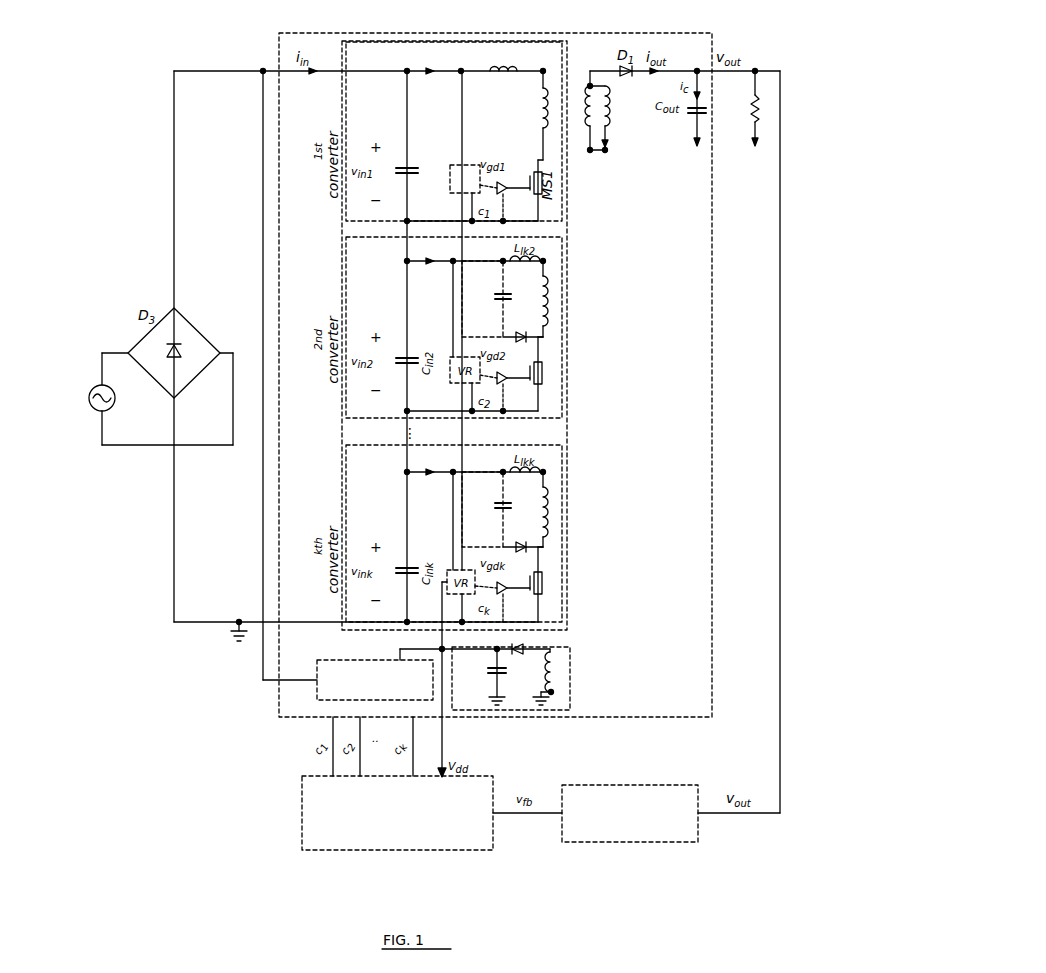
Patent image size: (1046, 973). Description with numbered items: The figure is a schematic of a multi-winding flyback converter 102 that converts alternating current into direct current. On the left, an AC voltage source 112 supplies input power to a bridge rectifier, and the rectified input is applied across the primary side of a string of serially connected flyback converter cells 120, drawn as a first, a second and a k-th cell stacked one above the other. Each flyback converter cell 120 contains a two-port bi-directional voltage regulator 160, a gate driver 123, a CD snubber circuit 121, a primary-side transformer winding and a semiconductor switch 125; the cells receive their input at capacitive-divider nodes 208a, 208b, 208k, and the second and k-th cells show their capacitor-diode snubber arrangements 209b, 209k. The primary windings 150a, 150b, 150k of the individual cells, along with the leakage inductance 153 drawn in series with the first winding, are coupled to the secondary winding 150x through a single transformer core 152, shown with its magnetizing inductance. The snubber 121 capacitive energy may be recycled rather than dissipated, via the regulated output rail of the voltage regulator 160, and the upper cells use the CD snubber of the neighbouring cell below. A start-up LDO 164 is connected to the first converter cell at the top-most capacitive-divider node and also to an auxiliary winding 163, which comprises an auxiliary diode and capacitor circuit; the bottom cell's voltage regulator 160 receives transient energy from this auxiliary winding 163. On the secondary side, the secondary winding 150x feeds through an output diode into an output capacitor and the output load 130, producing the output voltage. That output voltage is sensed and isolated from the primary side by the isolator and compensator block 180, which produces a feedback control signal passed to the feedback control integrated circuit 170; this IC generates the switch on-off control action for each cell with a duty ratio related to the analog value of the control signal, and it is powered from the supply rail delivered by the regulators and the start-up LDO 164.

The multi-winding flyback converter 102 is at (332, 33).
The flyback converter cell 120 is at (445, 42).
The primary winding 150a is at (553, 68).
The leakage inductance of first converter 153 is at (504, 75).
The isolator and compensator block 180 is at (413, 165).
The two-port bi-directional voltage regulator 160 is at (464, 165).
The gate driver 123 is at (508, 196).
The input node of first converter 208a is at (454, 83).
The input node of second converter 208b is at (454, 271).
The input node of kth converter 208k is at (454, 482).
The snubber clamp circuit of second converter 209b is at (466, 328).
The snubber clamp circuit of kth converter 209k is at (466, 538).
The primary winding 150b is at (557, 290).
The primary winding 150k is at (557, 492).
The CD snubber circuit 121 is at (555, 344).
The semiconductor switch 125 is at (546, 612).
The single transformer core 152 is at (615, 119).
The secondary winding 150x is at (592, 150).
The output load 130 is at (738, 108).
The AC voltage source 112 is at (86, 398).
The start-up LDO 164 is at (358, 683).
The auxiliary winding 163 is at (570, 702).
The feedback control integrated circuit 170 is at (497, 832).